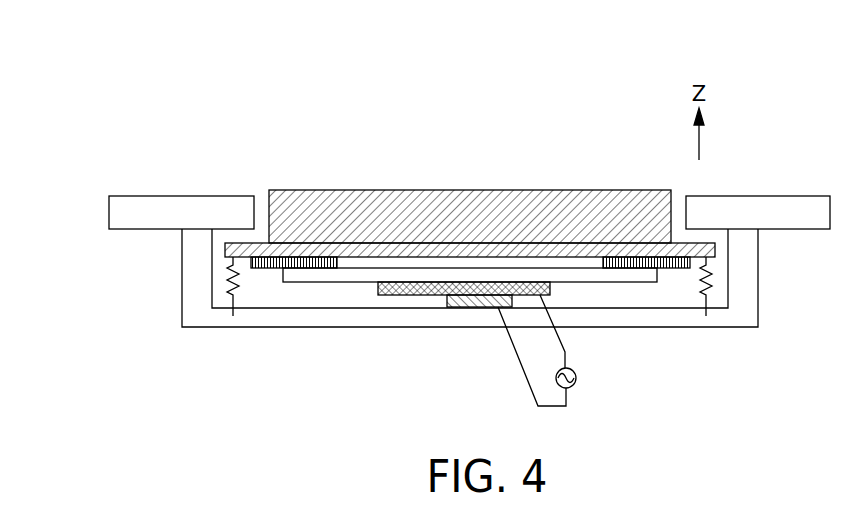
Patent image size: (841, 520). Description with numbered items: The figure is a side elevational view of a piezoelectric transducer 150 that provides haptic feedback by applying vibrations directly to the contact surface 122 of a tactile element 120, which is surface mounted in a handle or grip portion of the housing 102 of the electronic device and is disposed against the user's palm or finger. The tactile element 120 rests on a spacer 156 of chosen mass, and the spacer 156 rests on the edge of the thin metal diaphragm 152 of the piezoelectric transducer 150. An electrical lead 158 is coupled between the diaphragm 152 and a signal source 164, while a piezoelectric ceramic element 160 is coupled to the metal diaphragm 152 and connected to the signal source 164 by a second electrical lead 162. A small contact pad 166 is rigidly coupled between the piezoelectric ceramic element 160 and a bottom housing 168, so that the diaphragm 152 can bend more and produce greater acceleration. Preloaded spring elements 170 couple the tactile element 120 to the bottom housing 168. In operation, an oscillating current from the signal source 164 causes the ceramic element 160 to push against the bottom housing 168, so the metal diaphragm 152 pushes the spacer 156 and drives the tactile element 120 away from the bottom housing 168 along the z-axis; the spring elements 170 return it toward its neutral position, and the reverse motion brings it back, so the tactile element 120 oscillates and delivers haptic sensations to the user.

The housing 102 is at (172, 197).
The tactile element 120 is at (383, 200).
The contact surface 122 is at (523, 193).
The piezoelectric transducer 150 is at (722, 368).
The metal diaphragm 152 is at (335, 281).
The spacer 156 is at (260, 269).
The electrical lead 158 is at (557, 338).
The piezoelectric ceramic element 160 is at (398, 295).
The electrical lead 162 is at (533, 397).
The signal source 164 is at (577, 380).
The contact pad 166 is at (458, 307).
The bottom housing 168 is at (204, 320).
The spring elements 170 is at (233, 290).